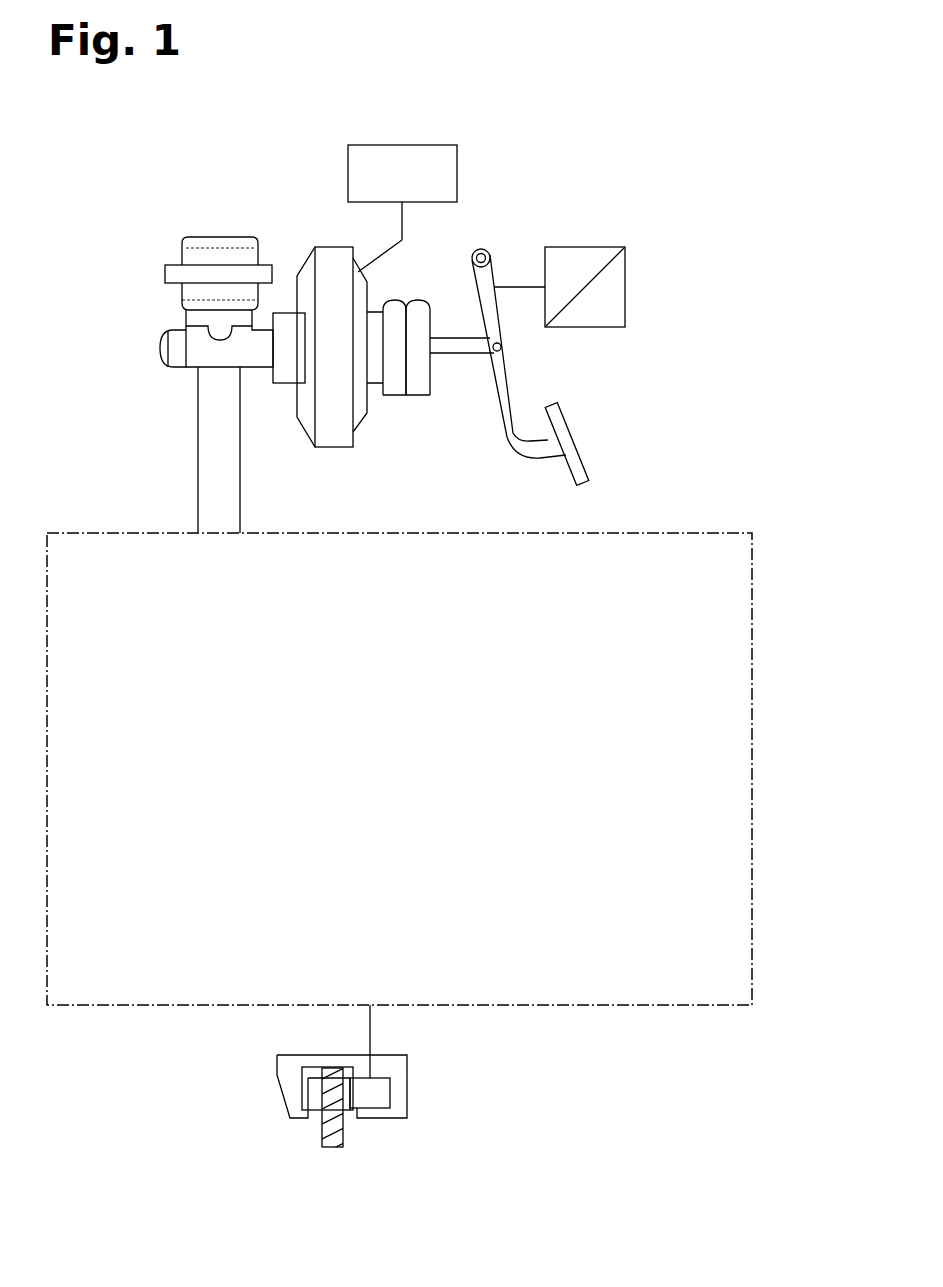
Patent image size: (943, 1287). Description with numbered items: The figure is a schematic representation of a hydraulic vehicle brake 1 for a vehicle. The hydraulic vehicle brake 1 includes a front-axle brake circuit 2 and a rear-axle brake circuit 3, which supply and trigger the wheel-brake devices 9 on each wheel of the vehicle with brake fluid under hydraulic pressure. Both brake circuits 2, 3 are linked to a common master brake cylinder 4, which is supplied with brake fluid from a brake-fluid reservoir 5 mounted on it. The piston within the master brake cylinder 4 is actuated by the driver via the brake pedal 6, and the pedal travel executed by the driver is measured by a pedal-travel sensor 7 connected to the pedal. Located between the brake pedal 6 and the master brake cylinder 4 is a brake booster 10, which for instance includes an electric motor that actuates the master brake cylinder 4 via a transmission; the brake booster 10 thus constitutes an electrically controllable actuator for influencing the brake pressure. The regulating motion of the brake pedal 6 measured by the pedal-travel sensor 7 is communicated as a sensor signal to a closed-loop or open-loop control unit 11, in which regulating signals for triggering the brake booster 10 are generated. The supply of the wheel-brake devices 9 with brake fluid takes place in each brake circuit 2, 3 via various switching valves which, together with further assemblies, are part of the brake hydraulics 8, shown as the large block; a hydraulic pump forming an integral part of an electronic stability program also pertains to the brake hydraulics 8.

The hydraulic vehicle brake 1 is at (592, 162).
The front-axle brake circuit 2 is at (186, 487).
The rear-axle brake circuit 3 is at (254, 487).
The master brake cylinder 4 is at (172, 349).
The brake-fluid reservoir 5 is at (180, 256).
The brake pedal 6 is at (570, 436).
The pedal-travel sensor 7 is at (627, 283).
The brake hydraulics 8 is at (754, 782).
The wheel-brake device 9 is at (371, 1150).
The brake booster 10 is at (358, 420).
The control unit 11 is at (348, 172).